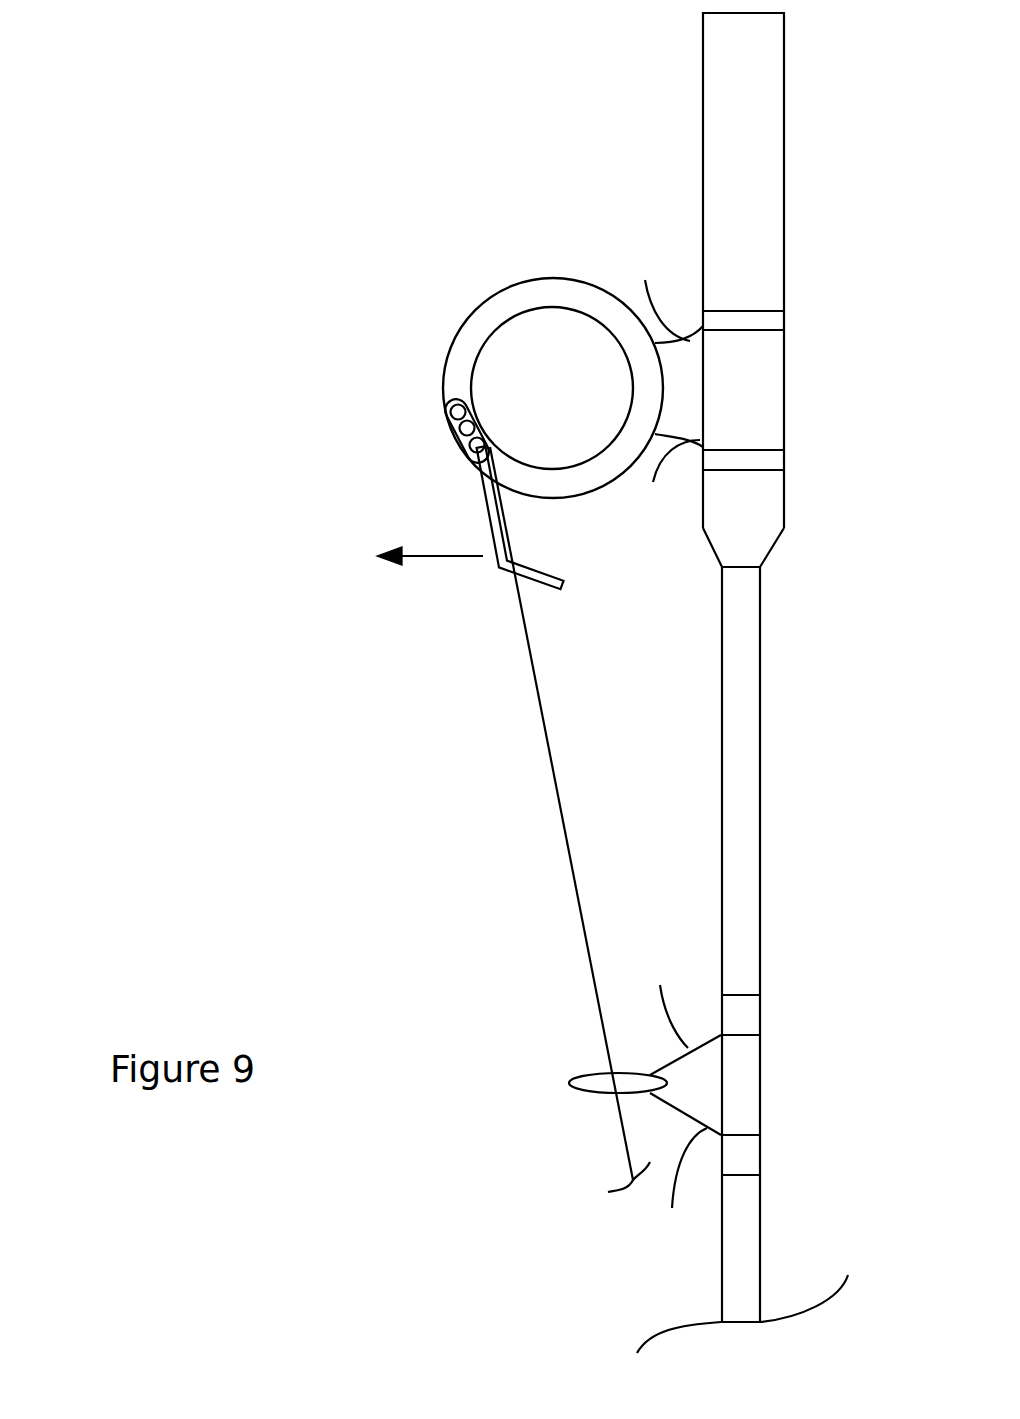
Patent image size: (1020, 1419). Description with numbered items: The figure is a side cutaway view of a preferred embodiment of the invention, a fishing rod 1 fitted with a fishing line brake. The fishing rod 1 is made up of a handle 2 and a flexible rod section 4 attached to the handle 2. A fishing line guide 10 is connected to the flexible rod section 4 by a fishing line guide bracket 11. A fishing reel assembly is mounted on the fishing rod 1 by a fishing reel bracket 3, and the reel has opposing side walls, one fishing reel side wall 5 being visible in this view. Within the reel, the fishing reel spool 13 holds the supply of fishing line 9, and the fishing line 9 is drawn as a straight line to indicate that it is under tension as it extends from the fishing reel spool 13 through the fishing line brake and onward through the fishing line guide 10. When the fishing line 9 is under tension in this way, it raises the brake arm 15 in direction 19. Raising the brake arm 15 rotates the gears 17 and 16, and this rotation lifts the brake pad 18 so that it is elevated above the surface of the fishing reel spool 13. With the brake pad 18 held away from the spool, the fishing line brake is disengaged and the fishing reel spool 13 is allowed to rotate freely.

The fishing rod 1 is at (506, 131).
The handle 2 is at (722, 110).
The fishing reel bracket 3 is at (715, 320).
The flexible rod section 4 is at (743, 635).
The fishing reel side wall 5 is at (553, 498).
The fishing line 9 is at (555, 782).
The fishing line guide 10 is at (590, 1083).
The fishing line guide bracket 11 is at (731, 1013).
The fishing reel spool 13 is at (505, 350).
The brake arm 15 is at (487, 517).
The gear 16 is at (457, 430).
The gear 17 is at (467, 445).
The brake pad 18 is at (452, 415).
The direction 19 is at (453, 557).